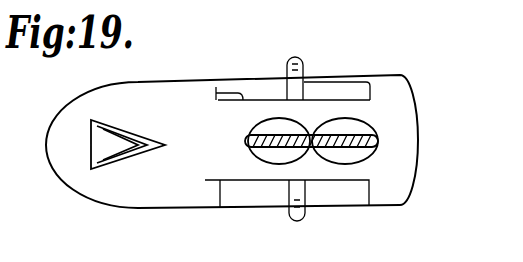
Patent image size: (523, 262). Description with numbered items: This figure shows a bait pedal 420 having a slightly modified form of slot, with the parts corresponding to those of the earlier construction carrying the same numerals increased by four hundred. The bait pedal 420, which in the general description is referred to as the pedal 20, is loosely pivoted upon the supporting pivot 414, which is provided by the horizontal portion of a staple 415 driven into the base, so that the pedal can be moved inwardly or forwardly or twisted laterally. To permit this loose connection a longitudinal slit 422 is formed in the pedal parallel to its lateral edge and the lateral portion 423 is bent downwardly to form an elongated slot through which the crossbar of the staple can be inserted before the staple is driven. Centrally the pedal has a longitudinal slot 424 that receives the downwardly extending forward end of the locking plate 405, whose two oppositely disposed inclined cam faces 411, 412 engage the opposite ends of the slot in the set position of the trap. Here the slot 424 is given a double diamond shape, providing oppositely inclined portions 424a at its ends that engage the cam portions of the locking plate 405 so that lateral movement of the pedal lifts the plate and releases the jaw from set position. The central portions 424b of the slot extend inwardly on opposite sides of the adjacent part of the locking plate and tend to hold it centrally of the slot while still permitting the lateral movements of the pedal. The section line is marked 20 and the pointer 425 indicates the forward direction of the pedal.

The bait pedal 20 is at (275, 52).
The locking plate 405 is at (370, 127).
The inclined cam face 411 is at (245, 142).
The inclined cam face 412 is at (378, 140).
The pivot 414 is at (307, 81).
The staple 415 is at (297, 86).
The bait pedal 420 is at (158, 76).
The longitudinal slit 422 is at (216, 93).
The lateral portion 423 is at (337, 90).
The slot 424 is at (353, 126).
The oppositely inclined portions 424a is at (257, 130).
The central portions of the slot 424b is at (310, 131).
The pointer 425 is at (98, 144).